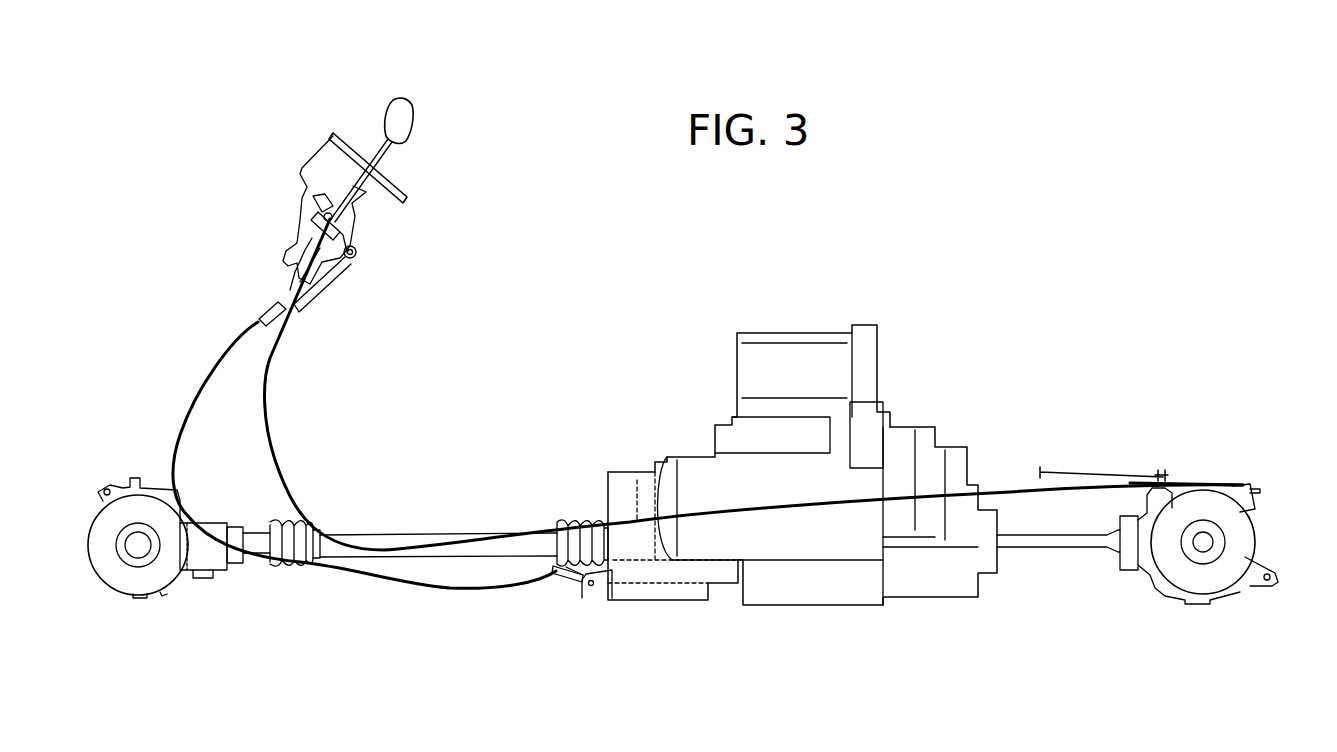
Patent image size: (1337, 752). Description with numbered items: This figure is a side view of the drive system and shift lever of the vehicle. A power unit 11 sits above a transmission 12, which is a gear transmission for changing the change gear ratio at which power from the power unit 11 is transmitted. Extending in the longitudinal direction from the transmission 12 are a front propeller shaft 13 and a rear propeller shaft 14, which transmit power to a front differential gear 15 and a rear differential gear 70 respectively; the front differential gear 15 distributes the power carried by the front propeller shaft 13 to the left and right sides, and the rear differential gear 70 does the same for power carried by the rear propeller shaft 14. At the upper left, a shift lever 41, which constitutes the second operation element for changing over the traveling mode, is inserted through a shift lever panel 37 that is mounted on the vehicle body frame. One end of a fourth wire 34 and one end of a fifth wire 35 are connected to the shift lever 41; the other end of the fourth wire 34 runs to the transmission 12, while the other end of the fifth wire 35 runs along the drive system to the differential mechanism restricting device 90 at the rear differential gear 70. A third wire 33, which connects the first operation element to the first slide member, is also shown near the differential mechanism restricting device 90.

The power unit 11 is at (797, 338).
The transmission 12 is at (630, 590).
The front propeller shaft 13 is at (448, 538).
The rear propeller shaft 14 is at (1057, 551).
The front differential gear 15 is at (110, 573).
The third wire 33 is at (1095, 470).
The fourth wire 34 is at (432, 590).
The fifth wire 35 is at (288, 482).
The shift lever panel 37 is at (349, 134).
The shift lever 41 is at (404, 110).
The rear differential gear 70 is at (1178, 602).
The differential mechanism restricting device 90 is at (1225, 437).